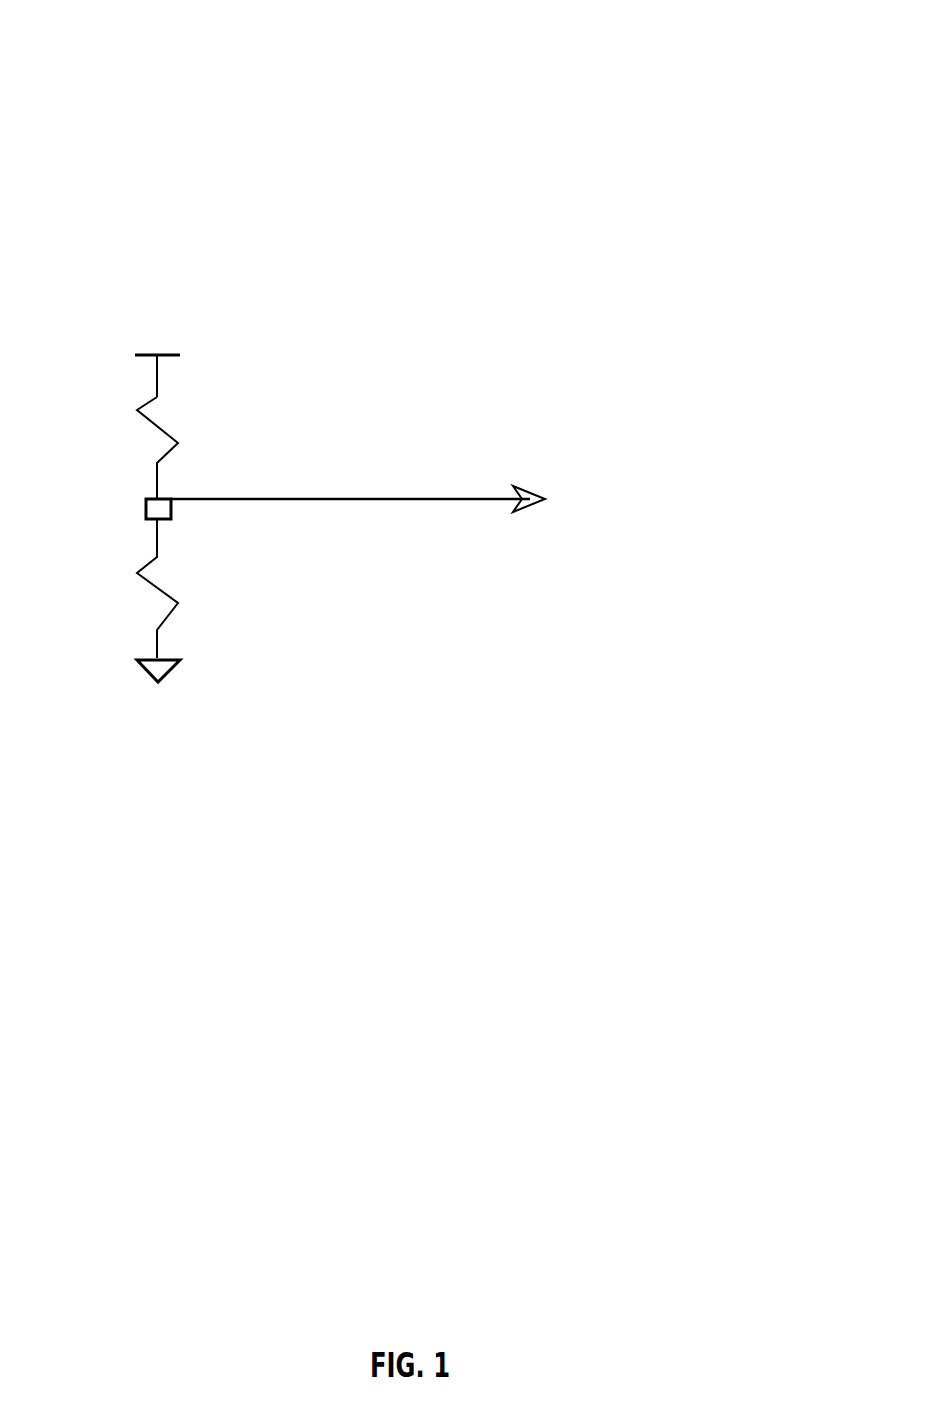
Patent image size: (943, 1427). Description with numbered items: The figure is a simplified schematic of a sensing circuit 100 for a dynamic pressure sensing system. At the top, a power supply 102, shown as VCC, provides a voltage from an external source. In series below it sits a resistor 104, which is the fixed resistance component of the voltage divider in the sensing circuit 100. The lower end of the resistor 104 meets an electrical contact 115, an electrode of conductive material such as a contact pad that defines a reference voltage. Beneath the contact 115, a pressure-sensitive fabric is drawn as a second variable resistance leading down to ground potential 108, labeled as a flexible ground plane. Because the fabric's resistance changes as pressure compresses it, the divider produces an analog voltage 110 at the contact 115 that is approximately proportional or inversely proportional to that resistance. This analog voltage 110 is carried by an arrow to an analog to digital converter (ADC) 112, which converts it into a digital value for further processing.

The sensing circuit 100 is at (428, 32).
The power supply 102 is at (148, 300).
The resistor 104 is at (138, 407).
The electrical contact 115 is at (147, 498).
The analog voltage 110 is at (408, 492).
The analog to digital converter (ADC) 112 is at (670, 457).
The ground potential 108 is at (147, 653).